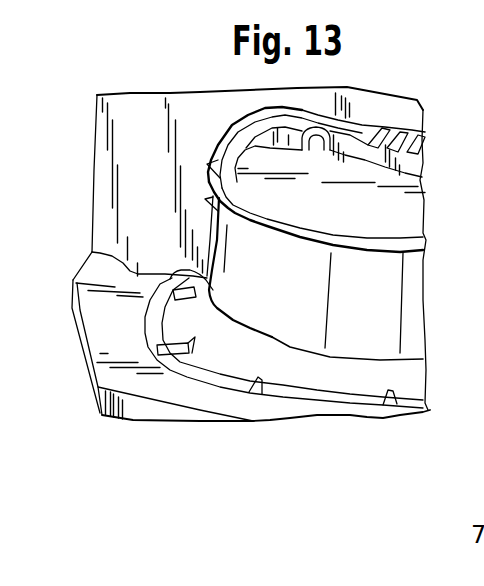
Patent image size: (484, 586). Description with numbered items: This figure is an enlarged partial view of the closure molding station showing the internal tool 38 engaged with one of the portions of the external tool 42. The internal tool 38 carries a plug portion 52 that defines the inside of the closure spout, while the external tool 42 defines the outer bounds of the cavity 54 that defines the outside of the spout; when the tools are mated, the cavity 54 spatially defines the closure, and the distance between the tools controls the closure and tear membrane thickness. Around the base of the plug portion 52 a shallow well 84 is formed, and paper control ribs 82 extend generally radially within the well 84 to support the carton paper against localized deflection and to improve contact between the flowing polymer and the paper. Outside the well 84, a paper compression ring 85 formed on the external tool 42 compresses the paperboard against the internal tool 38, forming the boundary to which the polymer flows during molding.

The internal tool 38 is at (112, 441).
The external tool 42 is at (147, 135).
The plug portion 52 is at (403, 307).
The cavity 54 is at (248, 152).
The paper control ribs 82 is at (127, 340).
The well 84 is at (100, 390).
The paper compression ring 85 is at (145, 276).